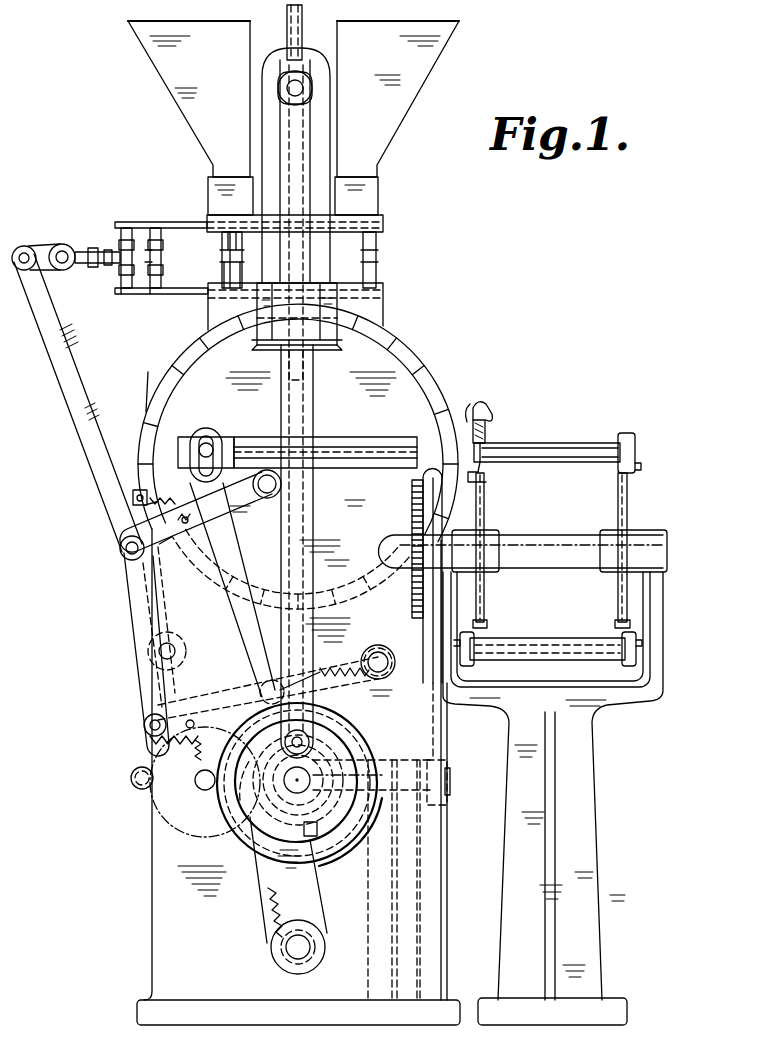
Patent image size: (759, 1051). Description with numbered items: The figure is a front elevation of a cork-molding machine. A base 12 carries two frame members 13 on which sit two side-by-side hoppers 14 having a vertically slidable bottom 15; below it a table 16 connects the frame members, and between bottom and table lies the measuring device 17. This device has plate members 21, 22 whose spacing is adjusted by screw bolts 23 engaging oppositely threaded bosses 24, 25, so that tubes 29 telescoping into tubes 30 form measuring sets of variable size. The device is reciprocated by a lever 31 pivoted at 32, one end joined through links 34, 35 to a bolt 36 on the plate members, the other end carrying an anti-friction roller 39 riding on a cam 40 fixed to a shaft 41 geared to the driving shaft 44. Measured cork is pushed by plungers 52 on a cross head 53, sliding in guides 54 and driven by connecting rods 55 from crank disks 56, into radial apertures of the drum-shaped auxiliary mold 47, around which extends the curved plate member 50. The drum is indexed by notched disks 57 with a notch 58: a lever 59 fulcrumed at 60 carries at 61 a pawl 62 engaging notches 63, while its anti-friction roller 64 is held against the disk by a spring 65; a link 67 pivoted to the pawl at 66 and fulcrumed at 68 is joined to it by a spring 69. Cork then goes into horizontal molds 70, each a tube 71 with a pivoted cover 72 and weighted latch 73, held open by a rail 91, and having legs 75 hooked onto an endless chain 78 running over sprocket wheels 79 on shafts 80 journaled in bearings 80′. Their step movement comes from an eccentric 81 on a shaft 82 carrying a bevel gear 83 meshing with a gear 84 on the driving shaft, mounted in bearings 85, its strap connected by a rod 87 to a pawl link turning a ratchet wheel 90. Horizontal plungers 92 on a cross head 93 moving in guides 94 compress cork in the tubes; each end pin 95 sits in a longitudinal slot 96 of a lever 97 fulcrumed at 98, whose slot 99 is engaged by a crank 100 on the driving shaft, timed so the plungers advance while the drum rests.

The base 12 is at (225, 1012).
The frame members 13 is at (160, 922).
The hoppers 14 is at (185, 104).
The bottom 15 is at (383, 220).
The table 16 is at (382, 302).
The measuring device 17 is at (222, 258).
The plate member 21 is at (172, 222).
The plate member 22 is at (178, 296).
The screw bolts 23 is at (163, 252).
The bosses 24 is at (138, 238).
The bosses 25 is at (142, 278).
The tube 29 is at (237, 243).
The tube 30 is at (225, 270).
The lever 31 is at (90, 476).
The pivot 32 is at (177, 650).
The link 34 is at (38, 247).
The link 35 is at (95, 250).
The bolt 36 is at (108, 267).
The anti-friction roller 39 is at (132, 781).
The cam 40 is at (160, 812).
The shaft 41 is at (195, 781).
The driving shaft 44 is at (345, 748).
The auxiliary mold 47 is at (416, 358).
The curved plate member 50 is at (432, 374).
The plungers 52 is at (300, 36).
The cross head 53 is at (306, 74).
The guides 54 is at (268, 62).
The connecting rods 55 is at (280, 406).
The crank disks 56 is at (340, 776).
The disks 57 is at (366, 760).
The notch 58 is at (315, 730).
The lever 59 is at (204, 682).
The fulcrum 60 is at (380, 648).
The pivot 61 is at (143, 726).
The pawl 62 is at (130, 624).
The notches 63 is at (151, 386).
The anti-friction roller 64 is at (268, 666).
The spring 65 is at (196, 746).
The pivot 66 is at (120, 550).
The link 67 is at (240, 508).
The fulcrum 68 is at (282, 484).
The spring 69 is at (150, 512).
The molds 70 is at (560, 443).
The tube 71 is at (514, 443).
The cover 72 is at (490, 424).
The latch 73 is at (481, 406).
The legs 75 is at (486, 469).
The endless chain 78 is at (485, 598).
The sprocket wheels 79 is at (483, 517).
The shafts 80 is at (555, 536).
The bearings 80′ is at (452, 532).
The eccentric 81 is at (446, 771).
The shaft 82 is at (450, 780).
The bevel gear 83 is at (318, 838).
The gear 84 is at (318, 858).
The bearings 85 is at (362, 845).
The rod 87 is at (432, 638).
The ratchet wheel 90 is at (412, 508).
The rail 91 is at (468, 404).
The plungers 92 is at (372, 450).
The cross head 93 is at (228, 440).
The guides 94 is at (343, 441).
The pin 95 is at (206, 442).
The longitudinal slot 96 is at (198, 445).
The lever 97 is at (196, 570).
The fulcrum 98 is at (282, 950).
The longitudinal slot 99 is at (243, 838).
The crank 100 is at (232, 796).